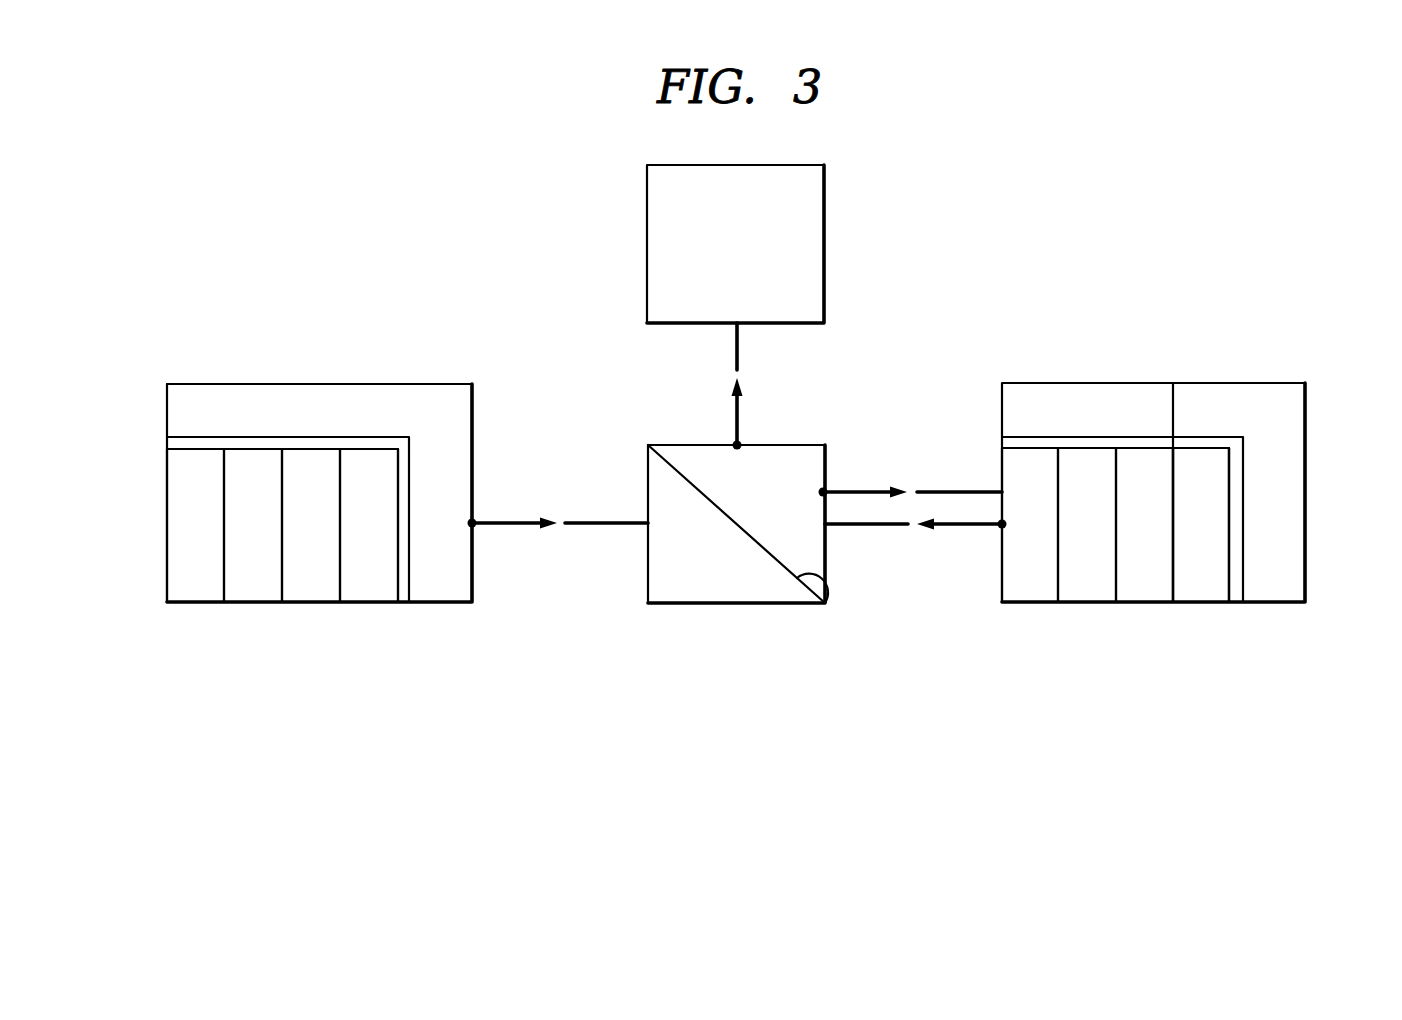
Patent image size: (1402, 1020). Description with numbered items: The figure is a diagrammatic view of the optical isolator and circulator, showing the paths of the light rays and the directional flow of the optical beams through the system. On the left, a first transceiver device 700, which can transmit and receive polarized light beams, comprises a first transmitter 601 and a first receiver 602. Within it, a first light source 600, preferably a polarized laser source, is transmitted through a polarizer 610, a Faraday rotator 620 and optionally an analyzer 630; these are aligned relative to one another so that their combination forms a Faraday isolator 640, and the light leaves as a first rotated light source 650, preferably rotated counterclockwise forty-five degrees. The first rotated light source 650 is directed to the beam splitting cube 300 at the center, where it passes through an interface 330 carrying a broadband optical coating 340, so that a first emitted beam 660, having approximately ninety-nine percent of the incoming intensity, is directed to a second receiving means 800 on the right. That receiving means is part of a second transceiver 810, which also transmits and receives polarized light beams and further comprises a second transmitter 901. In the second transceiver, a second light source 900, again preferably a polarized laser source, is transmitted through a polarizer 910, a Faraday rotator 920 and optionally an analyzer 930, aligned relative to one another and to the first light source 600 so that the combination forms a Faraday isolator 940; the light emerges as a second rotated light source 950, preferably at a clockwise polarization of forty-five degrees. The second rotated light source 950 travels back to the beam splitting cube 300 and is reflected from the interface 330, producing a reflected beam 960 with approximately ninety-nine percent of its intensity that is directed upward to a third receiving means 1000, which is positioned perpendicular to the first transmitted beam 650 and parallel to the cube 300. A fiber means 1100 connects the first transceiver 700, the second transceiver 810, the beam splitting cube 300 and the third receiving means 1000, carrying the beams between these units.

The beam splitting cube 300 is at (692, 605).
The interface 330 is at (793, 590).
The broadband optical coating 340 is at (822, 583).
The first light source 600 is at (175, 498).
The first transmitter 601 is at (192, 597).
The first receiver 602 is at (460, 405).
The polarizer 610 is at (249, 597).
The Faraday rotator 620 is at (306, 597).
The analyzer 630 is at (364, 597).
The Faraday isolator 640 is at (175, 445).
The first rotated light source 650 is at (472, 523).
The first emitted beam 660 is at (862, 492).
The first transceiver device 700 is at (203, 392).
The second receiving means 800 is at (1080, 393).
The second transceiver 810 is at (1270, 393).
The second light source 900 is at (1202, 595).
The second transmitter 901 is at (1217, 580).
The polarizer 910 is at (1144, 595).
The Faraday rotator 920 is at (1086, 595).
The analyzer 930 is at (1028, 595).
The Faraday isolator 940 is at (1238, 523).
The second rotated light source 950 is at (963, 527).
The reflected beam 960 is at (737, 420).
The third receiving means 1000 is at (827, 245).
The fiber means 1100 is at (595, 525).